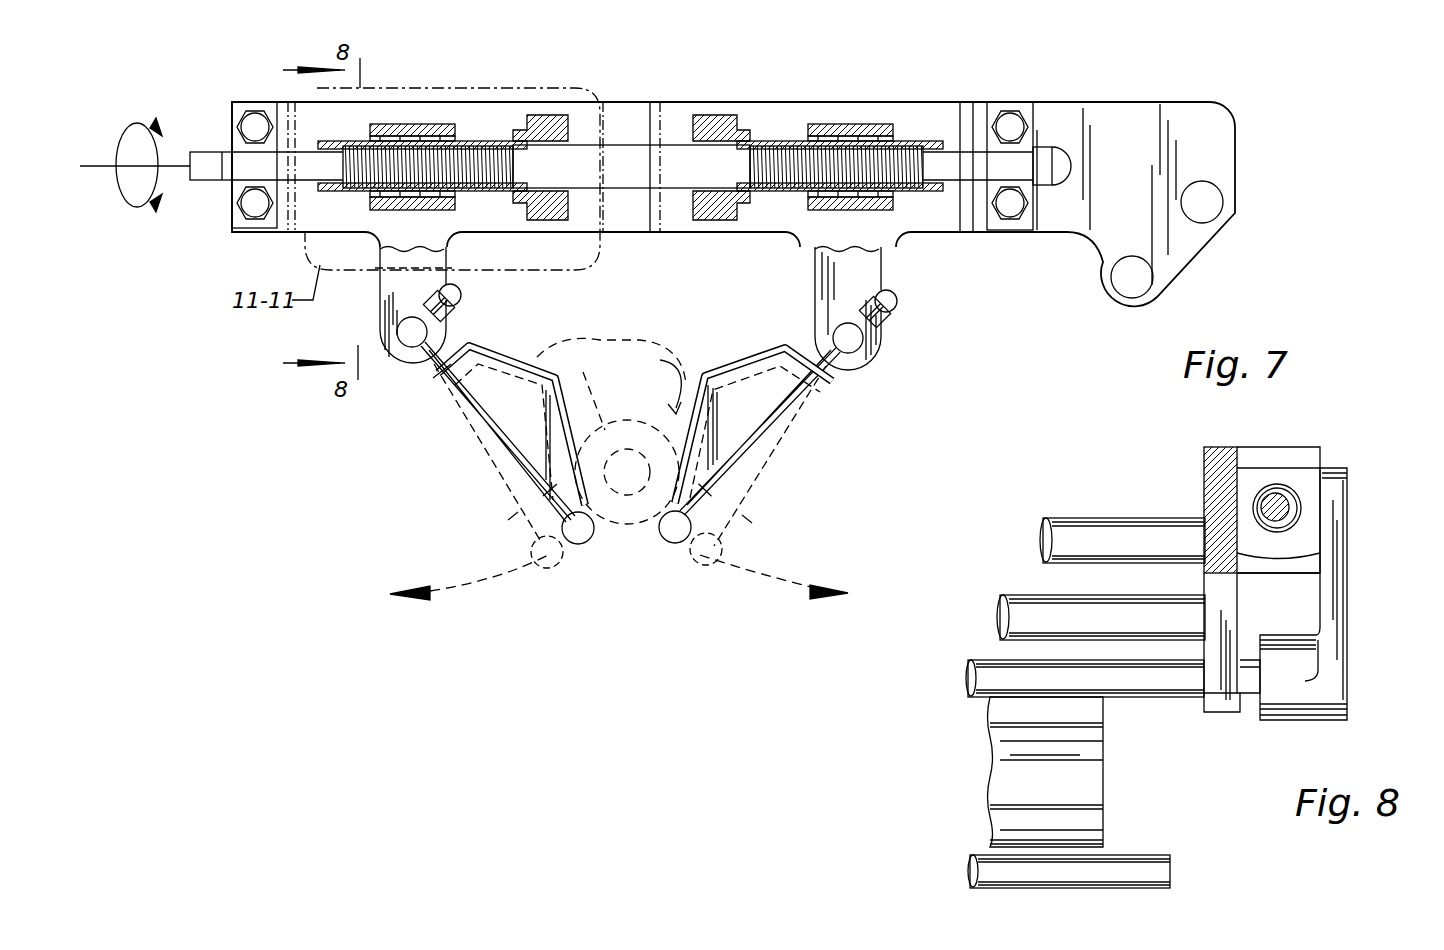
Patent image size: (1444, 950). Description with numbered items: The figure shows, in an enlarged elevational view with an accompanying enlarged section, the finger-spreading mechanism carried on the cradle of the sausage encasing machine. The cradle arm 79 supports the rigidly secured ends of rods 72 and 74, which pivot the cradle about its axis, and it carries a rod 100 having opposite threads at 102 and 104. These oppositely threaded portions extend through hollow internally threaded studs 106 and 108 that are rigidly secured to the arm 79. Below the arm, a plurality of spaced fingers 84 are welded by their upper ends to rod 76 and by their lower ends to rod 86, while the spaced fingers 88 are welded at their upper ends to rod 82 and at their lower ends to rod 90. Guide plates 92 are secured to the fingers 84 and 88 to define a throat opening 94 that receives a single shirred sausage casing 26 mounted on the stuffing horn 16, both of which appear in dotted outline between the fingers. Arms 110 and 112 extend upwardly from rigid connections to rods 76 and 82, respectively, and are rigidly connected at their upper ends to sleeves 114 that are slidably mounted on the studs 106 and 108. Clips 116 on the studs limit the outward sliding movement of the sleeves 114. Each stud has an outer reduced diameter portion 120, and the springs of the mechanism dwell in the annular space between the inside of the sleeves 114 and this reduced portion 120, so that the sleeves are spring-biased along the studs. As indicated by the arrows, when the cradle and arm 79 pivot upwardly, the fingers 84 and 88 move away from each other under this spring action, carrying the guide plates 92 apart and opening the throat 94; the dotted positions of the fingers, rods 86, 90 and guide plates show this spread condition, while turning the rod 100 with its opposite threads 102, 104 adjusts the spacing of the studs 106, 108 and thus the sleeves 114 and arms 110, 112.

In FIG. 7, the stuffing horn 16 is at (622, 448).
In FIG. 7, the shirred sausage casing 26 is at (583, 405).
In FIG. 7, the rod 72 is at (1213, 212).
In FIG. 8, the rod 72 is at (1045, 548).
In FIG. 7, the rod 74 is at (1137, 272).
In FIG. 8, the rod 74 is at (1020, 620).
In FIG. 7, the rod 76 is at (873, 375).
In FIG. 7, the cradle arm 79 is at (1236, 132).
In FIG. 8, the cradle arm 79 is at (1216, 460).
In FIG. 7, the rod 82 is at (410, 340).
In FIG. 8, the rod 82 is at (1000, 670).
In FIG. 7, the fingers 84 is at (757, 436).
In FIG. 7, the rod 86 is at (677, 537).
In FIG. 7, the fingers 88 is at (503, 448).
In FIG. 7, the rod 90 is at (587, 535).
In FIG. 8, the rod 90 is at (1000, 866).
In FIG. 7, the guide plates 92 is at (743, 360).
In FIG. 8, the guide plates 92 is at (1000, 827).
In FIG. 7, the throat opening 94 is at (659, 383).
In FIG. 7, the rod 100 is at (632, 160).
In FIG. 8, the rod 100 is at (1335, 575).
In FIG. 7, the threads 102 is at (508, 145).
In FIG. 8, the threads 102 is at (1285, 516).
In FIG. 7, the threads 104 is at (900, 140).
In FIG. 7, the stud 106 is at (467, 140).
In FIG. 7, the stud 108 is at (773, 140).
In FIG. 7, the arm 110 is at (462, 298).
In FIG. 8, the arm 110 is at (1335, 612).
In FIG. 7, the arm 112 is at (817, 317).
In FIG. 7, the sleeves 114 is at (357, 140).
In FIG. 8, the sleeves 114 is at (1300, 470).
In FIG. 8, the clips 116 is at (1290, 492).
In FIG. 7, the outer reduced diameter portion 120 is at (450, 137).
In FIG. 8, the outer reduced diameter portion 120 is at (1296, 505).